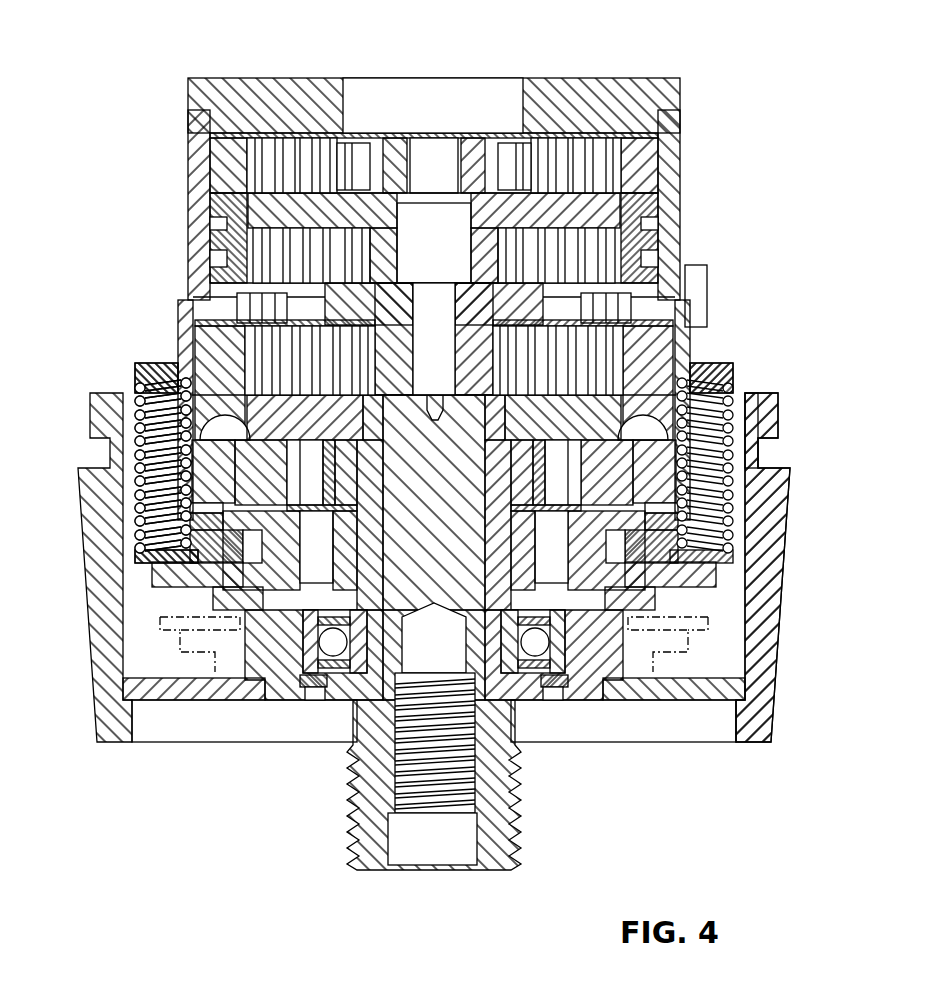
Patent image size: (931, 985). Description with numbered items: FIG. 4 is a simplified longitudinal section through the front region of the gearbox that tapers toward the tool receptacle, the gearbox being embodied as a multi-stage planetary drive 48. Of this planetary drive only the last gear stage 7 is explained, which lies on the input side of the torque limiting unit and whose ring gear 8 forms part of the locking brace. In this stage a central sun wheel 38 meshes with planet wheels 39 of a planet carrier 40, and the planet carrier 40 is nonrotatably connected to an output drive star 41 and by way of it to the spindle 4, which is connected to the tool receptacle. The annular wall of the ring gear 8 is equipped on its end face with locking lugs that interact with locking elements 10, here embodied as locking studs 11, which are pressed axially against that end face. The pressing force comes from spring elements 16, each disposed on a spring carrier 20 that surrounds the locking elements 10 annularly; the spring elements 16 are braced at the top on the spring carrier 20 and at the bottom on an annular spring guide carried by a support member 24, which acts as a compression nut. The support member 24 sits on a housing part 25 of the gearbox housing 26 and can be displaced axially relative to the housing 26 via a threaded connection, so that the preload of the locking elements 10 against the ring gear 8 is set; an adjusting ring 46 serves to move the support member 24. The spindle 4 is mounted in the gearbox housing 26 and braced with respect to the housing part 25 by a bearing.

The spindle 4 is at (440, 504).
The last gear stage 7 is at (706, 352).
The ring gear 8 is at (650, 340).
The locking elements 10 is at (145, 425).
The locking studs 11 is at (145, 425).
The spring elements 16 is at (762, 520).
The spring carrier 20 is at (733, 418).
The support member 24 is at (150, 577).
The housing part 25 is at (282, 680).
The gearbox housing 26 is at (190, 335).
The sun wheel 38 is at (448, 300).
The planet wheels 39 is at (278, 340).
The planet carrier 40 is at (733, 368).
The output drive star 41 is at (742, 460).
The adjusting ring 46 is at (762, 605).
The planetary drive 48 is at (452, 96).